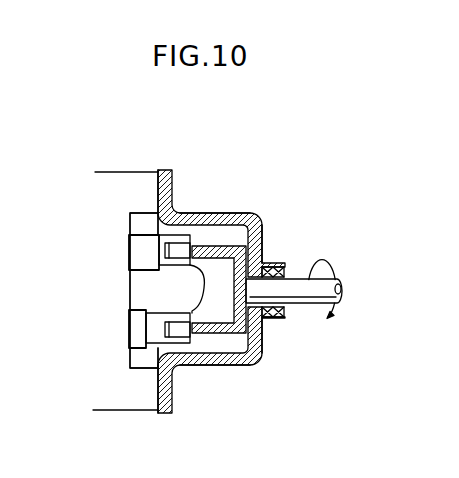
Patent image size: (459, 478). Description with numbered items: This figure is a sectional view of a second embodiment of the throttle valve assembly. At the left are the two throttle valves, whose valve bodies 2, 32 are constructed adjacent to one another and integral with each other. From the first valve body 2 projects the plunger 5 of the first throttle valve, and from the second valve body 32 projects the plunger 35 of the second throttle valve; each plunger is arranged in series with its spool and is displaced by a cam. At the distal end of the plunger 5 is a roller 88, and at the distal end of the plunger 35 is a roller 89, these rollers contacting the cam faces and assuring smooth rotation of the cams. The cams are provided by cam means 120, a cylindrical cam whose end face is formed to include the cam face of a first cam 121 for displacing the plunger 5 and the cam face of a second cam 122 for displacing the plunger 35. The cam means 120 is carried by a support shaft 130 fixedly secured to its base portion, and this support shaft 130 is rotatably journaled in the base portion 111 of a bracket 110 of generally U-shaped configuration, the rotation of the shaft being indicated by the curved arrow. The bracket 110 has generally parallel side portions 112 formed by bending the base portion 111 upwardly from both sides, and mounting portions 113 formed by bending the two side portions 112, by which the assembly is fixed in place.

The valve body 2 is at (52, 312).
The valve body 32 is at (100, 312).
The plunger 5 is at (140, 249).
The plunger 35 is at (108, 291).
The roller 88 is at (179, 247).
The roller 89 is at (187, 360).
The bracket 110 is at (245, 294).
The base portion 111 is at (263, 242).
The side portions 112 is at (243, 212).
The mounting portions 113 is at (173, 170).
The cam means 120 is at (262, 342).
The first cam 121 is at (187, 255).
The second cam 122 is at (187, 326).
The support shaft 130 is at (299, 304).